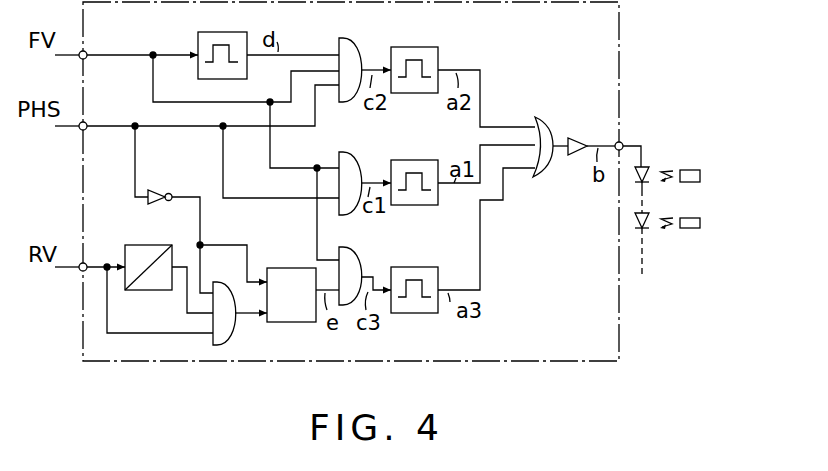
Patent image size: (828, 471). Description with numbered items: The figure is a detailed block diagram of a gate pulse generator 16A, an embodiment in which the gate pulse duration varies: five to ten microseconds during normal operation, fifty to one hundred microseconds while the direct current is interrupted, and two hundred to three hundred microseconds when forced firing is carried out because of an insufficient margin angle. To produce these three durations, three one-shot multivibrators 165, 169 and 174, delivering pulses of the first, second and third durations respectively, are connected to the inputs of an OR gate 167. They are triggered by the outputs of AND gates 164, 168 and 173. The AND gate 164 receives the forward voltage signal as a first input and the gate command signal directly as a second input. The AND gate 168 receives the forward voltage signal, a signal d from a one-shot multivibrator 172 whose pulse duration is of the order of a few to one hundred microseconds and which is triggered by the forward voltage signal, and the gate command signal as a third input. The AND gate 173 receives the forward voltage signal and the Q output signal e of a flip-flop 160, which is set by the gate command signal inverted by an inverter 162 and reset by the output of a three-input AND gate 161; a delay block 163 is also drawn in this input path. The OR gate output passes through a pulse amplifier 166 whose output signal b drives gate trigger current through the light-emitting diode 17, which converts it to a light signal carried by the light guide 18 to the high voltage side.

The gate pulse generator 16A is at (621, 302).
The one-shot multivibrator 172 is at (197, 37).
The AND gate 168 is at (348, 37).
The one-shot multivibrator 169 is at (439, 58).
The AND gate 164 is at (364, 143).
The one-shot multivibrator 165 is at (423, 207).
The AND gate 173 is at (363, 243).
The one-shot multivibrator 174 is at (416, 315).
The OR gate 167 is at (548, 121).
The pulse amplifier 166 is at (583, 135).
The light-emitting diode 17 is at (647, 163).
The light guide 18 is at (688, 168).
The inverter 162 is at (160, 189).
The delay circuit TD1 163 is at (147, 291).
The AND gate 161 is at (234, 327).
The flip-flop 160 is at (288, 266).